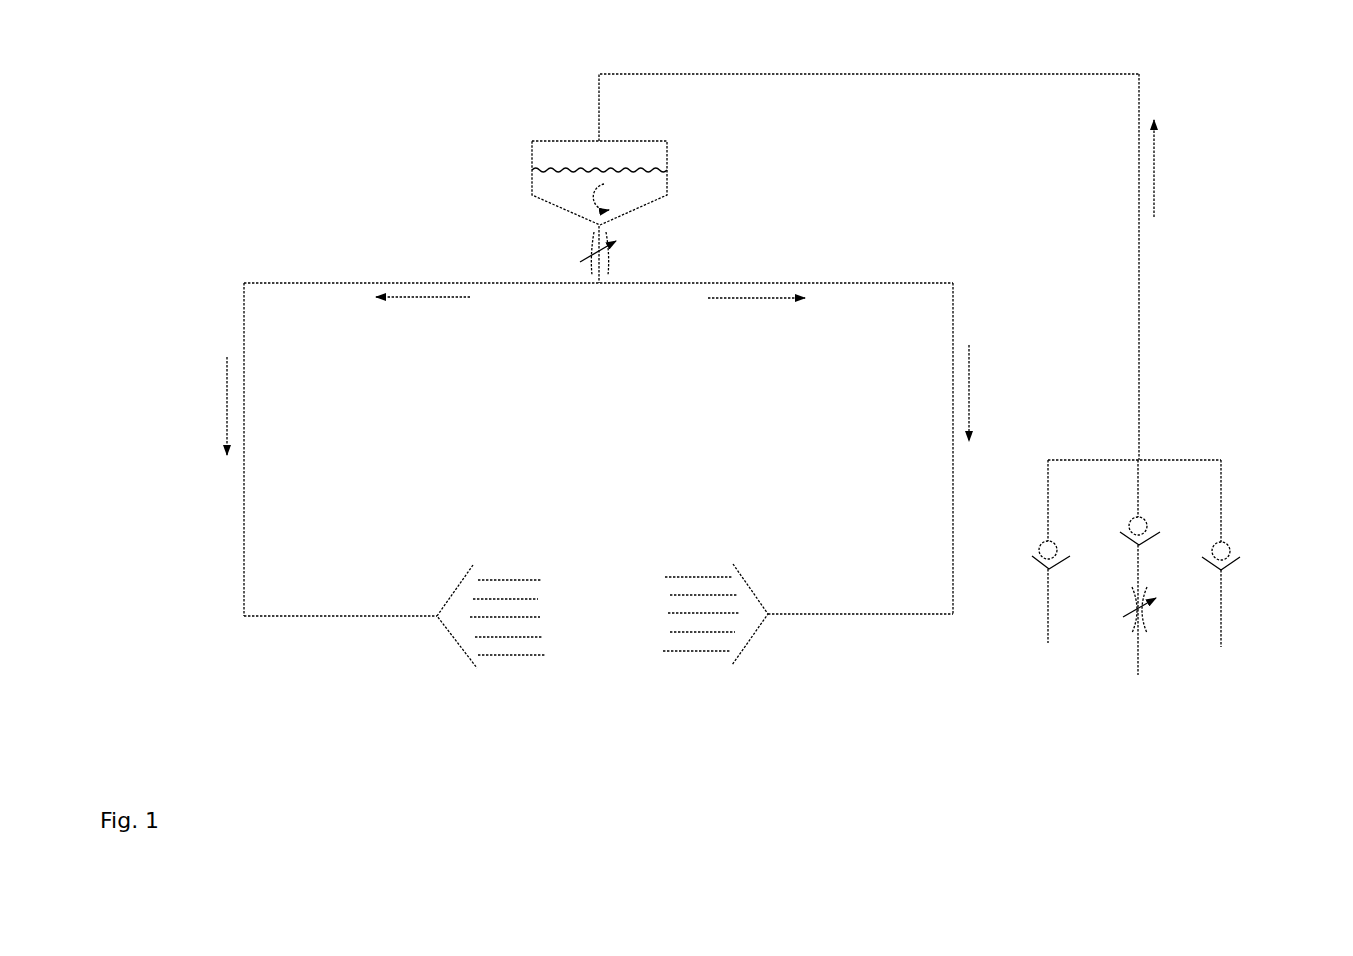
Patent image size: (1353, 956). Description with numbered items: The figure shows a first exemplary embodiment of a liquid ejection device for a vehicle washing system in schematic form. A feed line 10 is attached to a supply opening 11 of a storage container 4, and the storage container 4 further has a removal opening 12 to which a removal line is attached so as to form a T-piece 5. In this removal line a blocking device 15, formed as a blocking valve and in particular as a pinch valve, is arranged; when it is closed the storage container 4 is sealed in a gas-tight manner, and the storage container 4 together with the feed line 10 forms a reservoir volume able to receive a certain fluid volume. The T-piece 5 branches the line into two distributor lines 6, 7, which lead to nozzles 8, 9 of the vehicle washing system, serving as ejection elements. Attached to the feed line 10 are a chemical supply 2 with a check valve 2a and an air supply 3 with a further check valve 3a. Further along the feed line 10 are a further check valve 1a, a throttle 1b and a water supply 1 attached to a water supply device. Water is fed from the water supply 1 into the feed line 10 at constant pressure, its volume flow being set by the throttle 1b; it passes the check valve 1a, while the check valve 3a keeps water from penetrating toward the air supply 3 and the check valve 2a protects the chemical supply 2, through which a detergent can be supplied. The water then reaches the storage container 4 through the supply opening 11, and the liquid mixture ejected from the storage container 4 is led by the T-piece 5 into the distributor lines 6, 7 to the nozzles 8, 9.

The water supply 1 is at (1117, 601).
The further check valve 1a is at (1208, 463).
The throttle 1b is at (1108, 640).
The chemical supply 2 is at (1200, 592).
The check valve 2a is at (1254, 511).
The air supply 3 is at (1015, 578).
The further check valve 3a is at (1023, 576).
The storage container 4 is at (565, 137).
The T-piece 5 is at (567, 300).
The distributor line 6 is at (174, 449).
The distributor line 7 is at (998, 448).
The nozzle 8 is at (460, 645).
The nozzle 9 is at (742, 638).
The feed line 10 is at (1189, 267).
The supply opening 11 is at (847, 89).
The removal opening 12 is at (644, 241).
The blocking device 15 is at (544, 244).